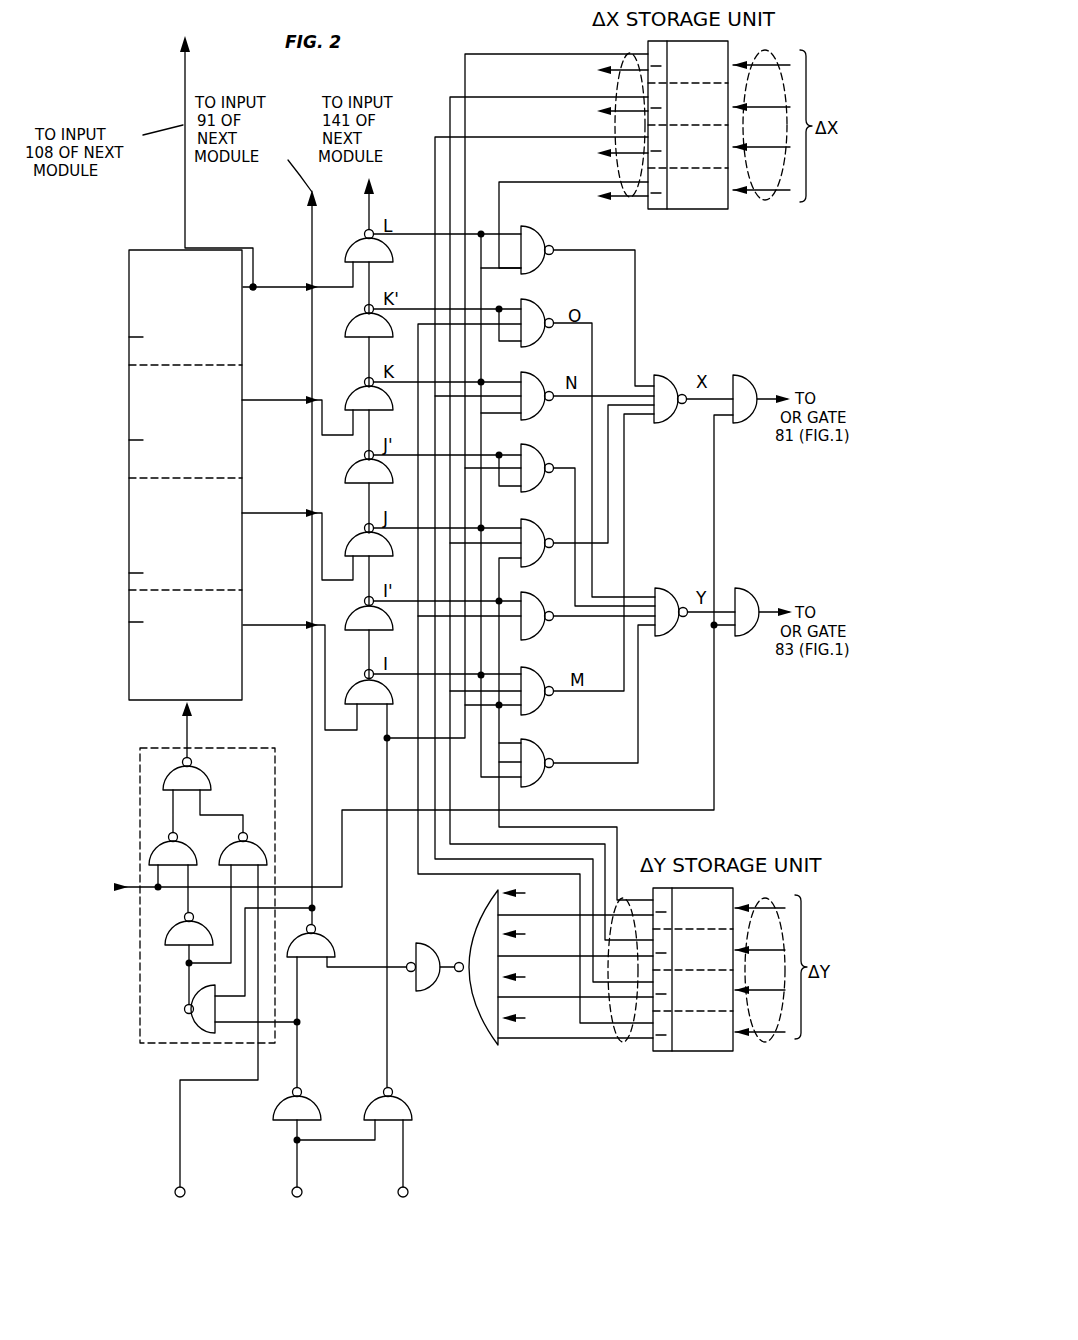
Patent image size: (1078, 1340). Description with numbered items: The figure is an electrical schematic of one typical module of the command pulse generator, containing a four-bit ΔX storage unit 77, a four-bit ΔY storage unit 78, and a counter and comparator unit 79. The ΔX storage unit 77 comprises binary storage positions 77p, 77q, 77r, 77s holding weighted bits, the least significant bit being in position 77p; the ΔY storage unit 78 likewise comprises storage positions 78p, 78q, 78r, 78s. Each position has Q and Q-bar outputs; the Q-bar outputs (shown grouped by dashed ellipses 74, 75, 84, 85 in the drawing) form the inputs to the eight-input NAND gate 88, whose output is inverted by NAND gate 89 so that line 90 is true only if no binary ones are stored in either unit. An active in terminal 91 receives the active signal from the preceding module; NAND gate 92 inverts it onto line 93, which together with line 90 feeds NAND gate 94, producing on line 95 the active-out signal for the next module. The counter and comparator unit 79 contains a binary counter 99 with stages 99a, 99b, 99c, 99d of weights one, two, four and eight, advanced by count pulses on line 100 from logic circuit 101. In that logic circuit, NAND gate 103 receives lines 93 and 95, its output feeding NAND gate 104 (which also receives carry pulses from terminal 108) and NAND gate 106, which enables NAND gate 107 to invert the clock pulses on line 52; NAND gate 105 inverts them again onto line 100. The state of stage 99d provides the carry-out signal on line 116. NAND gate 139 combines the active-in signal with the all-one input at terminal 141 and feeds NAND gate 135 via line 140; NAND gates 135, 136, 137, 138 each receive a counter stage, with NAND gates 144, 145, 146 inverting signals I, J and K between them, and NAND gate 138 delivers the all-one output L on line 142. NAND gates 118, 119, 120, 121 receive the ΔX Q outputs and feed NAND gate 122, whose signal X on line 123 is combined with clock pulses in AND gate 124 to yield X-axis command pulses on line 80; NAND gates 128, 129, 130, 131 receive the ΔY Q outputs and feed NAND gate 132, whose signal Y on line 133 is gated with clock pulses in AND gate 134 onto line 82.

The line 52 is at (714, 785).
The delta X storage unit output lines 74 is at (618, 183).
The delta Y storage unit output lines 75 is at (626, 1062).
The ΔX storage unit 77 is at (648, 209).
The binary storage position 77s is at (728, 45).
The binary storage position 77r is at (730, 90).
The binary storage position 77q is at (730, 155).
The binary storage position 77p is at (730, 200).
The ΔY storage unit 78 is at (653, 1051).
The binary storage position 78s is at (733, 892).
The binary storage position 78r is at (733, 940).
The binary storage position 78q is at (733, 1000).
The binary storage position 78p is at (735, 1045).
The counter and comparator unit 79 is at (478, 1068).
The line 80 is at (767, 395).
The line 82 is at (767, 602).
The delta X input lines 84 is at (788, 200).
The delta Y input lines 85 is at (778, 1040).
The eight-input NAND gate 88 is at (482, 1030).
The NAND gate 89 is at (421, 946).
The line 90 is at (364, 967).
The active in terminal 91 is at (292, 1187).
The NAND gate 92 is at (274, 1120).
The line 93 is at (297, 1001).
The NAND gate 94 is at (326, 932).
The line 95 is at (304, 202).
The binary counter 99 is at (129, 521).
The counter stage 99a is at (129, 622).
The counter stage 99b is at (129, 573).
The counter stage 99c is at (129, 440).
The counter stage 99d is at (129, 337).
The line 100 is at (187, 735).
The logic circuit 101 is at (140, 775).
The NAND gate 103 is at (195, 1015).
The NAND gate 104 is at (248, 832).
The NAND gate 105 is at (205, 775).
The NAND gate 106 is at (178, 916).
The NAND gate 107 is at (180, 845).
The terminal 108 is at (178, 1187).
The line 116 is at (185, 70).
The NAND gate 118 is at (550, 254).
The NAND gate 119 is at (540, 372).
The NAND gate 120 is at (540, 520).
The NAND gate 121 is at (540, 669).
The NAND gate 122 is at (666, 374).
The line 123 is at (698, 410).
The AND gate 124 is at (743, 378).
The NAND gate 128 is at (546, 312).
The NAND gate 129 is at (540, 444).
The NAND gate 130 is at (540, 594).
The NAND gate 131 is at (540, 741).
The NAND gate 132 is at (666, 582).
The line 133 is at (700, 622).
The AND gate 134 is at (743, 580).
The NAND gate 135 is at (352, 666).
The NAND gate 136 is at (348, 526).
The NAND gate 137 is at (352, 392).
The NAND gate 138 is at (348, 250).
The NAND gate 139 is at (412, 1106).
The line 140 is at (383, 772).
The all 1 input terminal 141 is at (405, 1185).
The line 142 is at (346, 204).
The NAND gate 144 is at (352, 611).
The NAND gate 145 is at (352, 465).
The NAND gate 146 is at (348, 340).